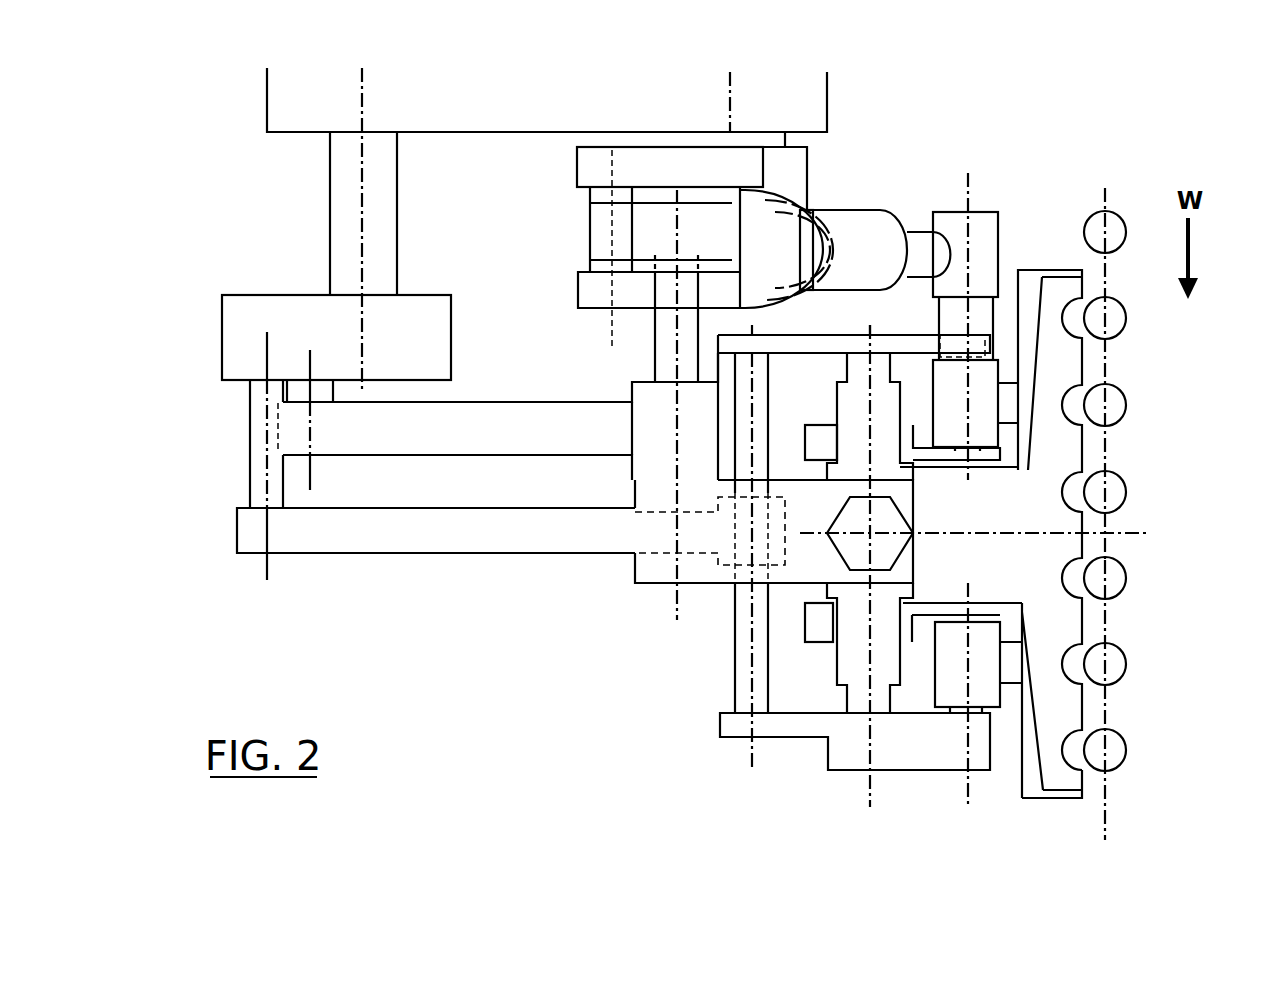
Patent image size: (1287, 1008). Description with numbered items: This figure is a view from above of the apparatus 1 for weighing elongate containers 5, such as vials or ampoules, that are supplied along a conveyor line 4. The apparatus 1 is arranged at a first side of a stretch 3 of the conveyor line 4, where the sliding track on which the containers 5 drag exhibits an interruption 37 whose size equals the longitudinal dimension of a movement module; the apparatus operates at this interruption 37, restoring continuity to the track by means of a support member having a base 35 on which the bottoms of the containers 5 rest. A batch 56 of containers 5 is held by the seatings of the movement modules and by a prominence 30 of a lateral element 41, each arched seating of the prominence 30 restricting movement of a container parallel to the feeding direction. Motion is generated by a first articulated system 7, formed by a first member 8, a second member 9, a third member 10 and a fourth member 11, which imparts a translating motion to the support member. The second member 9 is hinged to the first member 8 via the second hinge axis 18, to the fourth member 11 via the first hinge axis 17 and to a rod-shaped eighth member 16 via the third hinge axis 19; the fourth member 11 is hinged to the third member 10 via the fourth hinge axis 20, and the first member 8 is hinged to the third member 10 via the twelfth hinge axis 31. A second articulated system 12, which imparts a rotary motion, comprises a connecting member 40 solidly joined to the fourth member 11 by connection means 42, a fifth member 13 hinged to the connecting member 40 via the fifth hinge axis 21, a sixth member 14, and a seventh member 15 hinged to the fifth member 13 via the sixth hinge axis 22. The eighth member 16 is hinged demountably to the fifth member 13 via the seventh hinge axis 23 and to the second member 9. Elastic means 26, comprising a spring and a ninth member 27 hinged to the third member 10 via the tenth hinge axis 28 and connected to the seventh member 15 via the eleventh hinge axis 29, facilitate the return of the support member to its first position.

The apparatus 1 is at (508, 695).
The stretch 3 is at (1160, 762).
The conveyor line 4 is at (1115, 805).
The containers 5 is at (1120, 478).
The first articulated system 7 is at (336, 594).
The first member 8 is at (485, 113).
The second member 9 is at (235, 363).
The third member 10 is at (600, 225).
The fourth member 11 is at (503, 387).
The second articulated system 12 is at (790, 793).
The fifth member 13 is at (827, 343).
The sixth member 14 is at (823, 438).
The seventh member 15 is at (1007, 210).
The eighth member 16 is at (482, 537).
The first hinge axis 17 is at (313, 475).
The second hinge axis 18 is at (357, 242).
The third hinge axis 19 is at (262, 575).
The fourth hinge axis 20 is at (670, 602).
The fifth hinge axis 21 is at (865, 793).
The sixth hinge axis 22 is at (972, 313).
The seventh hinge axis 23 is at (750, 755).
The elastic means 26 is at (872, 205).
The ninth member 27 is at (587, 162).
The tenth hinge axis 28 is at (606, 328).
The eleventh hinge axis 29 is at (960, 178).
The prominence 30 is at (1058, 772).
The twelfth hinge axis 31 is at (725, 93).
The base 35 is at (1032, 796).
The interruption 37 is at (1130, 537).
The connecting member 40 is at (847, 660).
The lateral element 41 is at (990, 517).
The connection means 42 is at (857, 545).
The batch 56 is at (1166, 640).